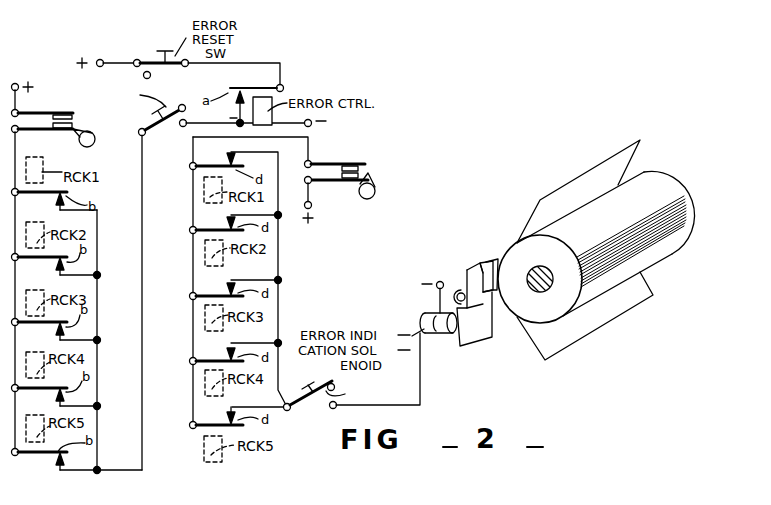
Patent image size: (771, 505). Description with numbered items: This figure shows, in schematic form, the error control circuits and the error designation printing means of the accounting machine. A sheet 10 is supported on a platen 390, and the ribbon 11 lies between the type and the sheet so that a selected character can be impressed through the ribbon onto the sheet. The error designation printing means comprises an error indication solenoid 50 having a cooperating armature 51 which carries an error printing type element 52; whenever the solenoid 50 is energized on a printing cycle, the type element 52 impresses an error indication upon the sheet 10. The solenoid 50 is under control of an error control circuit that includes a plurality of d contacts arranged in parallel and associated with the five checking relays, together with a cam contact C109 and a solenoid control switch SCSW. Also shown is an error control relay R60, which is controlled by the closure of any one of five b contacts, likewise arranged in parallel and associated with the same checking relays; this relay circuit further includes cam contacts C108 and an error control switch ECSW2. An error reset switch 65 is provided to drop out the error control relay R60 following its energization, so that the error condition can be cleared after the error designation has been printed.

The error reset switch 65 is at (145, 61).
The ribbon 11 is at (507, 258).
The error printing type element 52 is at (478, 266).
The error indication solenoid 50 is at (422, 317).
The armature 51 is at (484, 322).
The platen 390 is at (664, 243).
The sheet 10 is at (643, 283).
The cam contacts C108 is at (84, 113).
The cam contact C109 is at (364, 172).
The error control relay R60 is at (245, 111).
The error control switch ECSW2 is at (129, 112).
The solenoid control switch SCSW is at (337, 396).